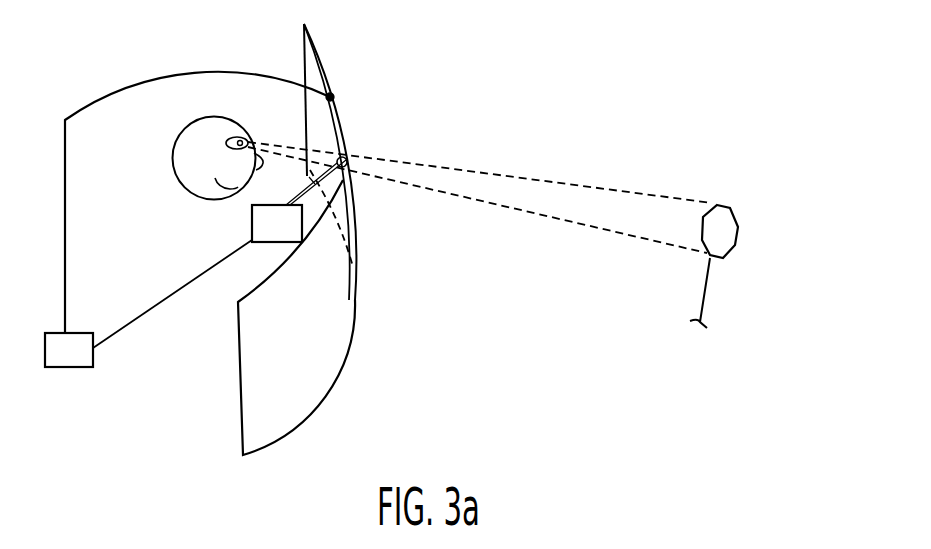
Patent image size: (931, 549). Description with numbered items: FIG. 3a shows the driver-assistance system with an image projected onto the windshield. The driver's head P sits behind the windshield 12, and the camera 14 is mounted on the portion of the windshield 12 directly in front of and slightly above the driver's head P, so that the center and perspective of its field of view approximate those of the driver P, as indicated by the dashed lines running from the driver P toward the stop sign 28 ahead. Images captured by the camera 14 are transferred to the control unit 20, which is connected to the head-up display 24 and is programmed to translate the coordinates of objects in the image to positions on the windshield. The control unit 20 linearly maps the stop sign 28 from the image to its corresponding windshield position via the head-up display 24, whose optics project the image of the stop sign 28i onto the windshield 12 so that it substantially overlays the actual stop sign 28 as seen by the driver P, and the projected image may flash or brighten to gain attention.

The windshield 12 is at (278, 425).
The camera 14 is at (334, 93).
The control unit 20 is at (67, 368).
The head-up display 24 is at (268, 243).
The stop sign 28 is at (730, 205).
The image of the stop sign 28i is at (348, 158).
The driver's head P is at (172, 153).